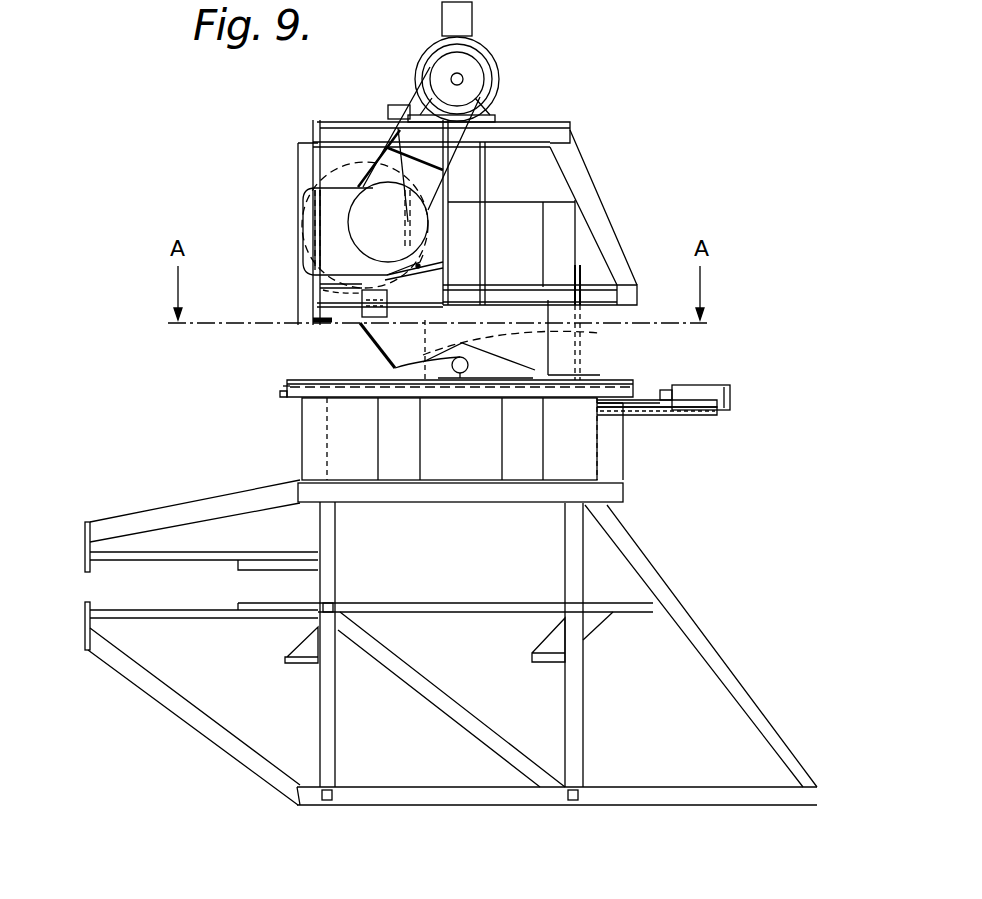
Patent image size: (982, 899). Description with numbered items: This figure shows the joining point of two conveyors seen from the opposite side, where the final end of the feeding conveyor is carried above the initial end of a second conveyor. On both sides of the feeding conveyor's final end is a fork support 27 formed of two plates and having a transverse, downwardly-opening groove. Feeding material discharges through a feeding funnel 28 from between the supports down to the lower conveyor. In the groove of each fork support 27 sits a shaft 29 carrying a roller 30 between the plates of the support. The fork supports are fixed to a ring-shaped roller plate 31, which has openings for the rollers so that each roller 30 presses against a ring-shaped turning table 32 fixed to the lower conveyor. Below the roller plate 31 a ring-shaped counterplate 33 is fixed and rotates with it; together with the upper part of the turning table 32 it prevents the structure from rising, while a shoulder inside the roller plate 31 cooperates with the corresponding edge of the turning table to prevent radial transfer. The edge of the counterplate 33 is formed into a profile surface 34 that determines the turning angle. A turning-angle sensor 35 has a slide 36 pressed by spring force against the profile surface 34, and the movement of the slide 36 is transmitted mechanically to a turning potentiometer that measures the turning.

The fork support 27 is at (395, 366).
The feeding funnel 28 is at (565, 227).
The shaft 29 is at (470, 366).
The roller 30 is at (560, 362).
The roller plate 31 is at (637, 388).
The turning table 32 is at (580, 458).
The counterplate 33 is at (283, 394).
The profile surface 34 is at (653, 412).
The turning-angle sensor 35 is at (727, 397).
The slide 36 is at (673, 415).